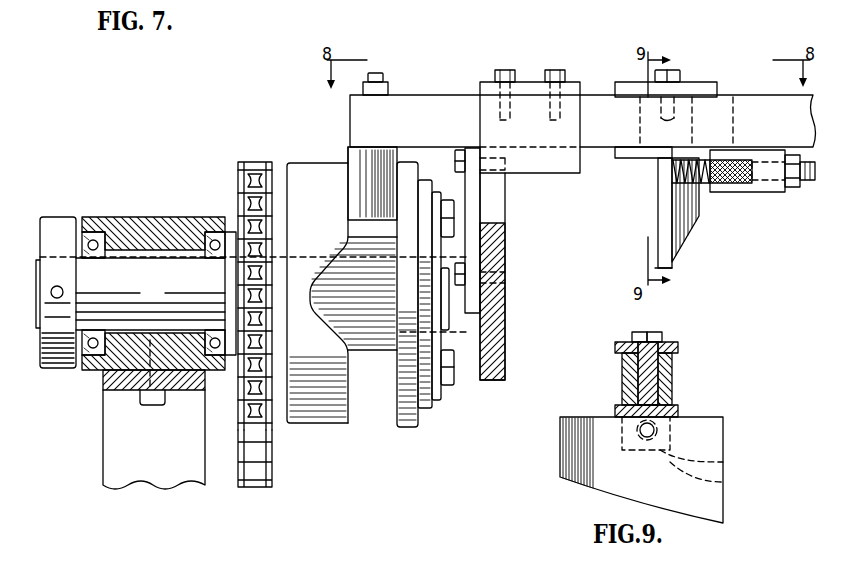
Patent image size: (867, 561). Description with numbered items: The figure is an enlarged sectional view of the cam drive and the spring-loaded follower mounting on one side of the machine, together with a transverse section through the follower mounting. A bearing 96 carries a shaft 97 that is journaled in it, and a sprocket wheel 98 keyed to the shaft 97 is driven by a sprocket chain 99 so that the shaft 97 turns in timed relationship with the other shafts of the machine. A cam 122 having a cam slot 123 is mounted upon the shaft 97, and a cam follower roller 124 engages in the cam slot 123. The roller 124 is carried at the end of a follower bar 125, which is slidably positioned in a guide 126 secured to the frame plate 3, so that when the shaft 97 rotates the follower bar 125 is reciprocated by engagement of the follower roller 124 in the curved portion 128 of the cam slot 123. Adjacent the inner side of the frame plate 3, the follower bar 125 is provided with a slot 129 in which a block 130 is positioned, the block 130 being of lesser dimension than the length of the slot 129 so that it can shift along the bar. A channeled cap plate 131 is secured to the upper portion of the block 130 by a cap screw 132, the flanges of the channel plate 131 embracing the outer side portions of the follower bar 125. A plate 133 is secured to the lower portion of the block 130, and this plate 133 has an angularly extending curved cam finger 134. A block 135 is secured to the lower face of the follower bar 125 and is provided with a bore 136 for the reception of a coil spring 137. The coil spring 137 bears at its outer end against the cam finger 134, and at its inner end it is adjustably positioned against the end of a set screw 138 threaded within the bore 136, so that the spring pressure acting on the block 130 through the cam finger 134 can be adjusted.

In FIG. 7, the frame plate 3 is at (508, 342).
In FIG. 7, the bearing 96 is at (152, 222).
In FIG. 7, the shaft 97 is at (174, 280).
In FIG. 7, the sprocket wheel 98 is at (255, 195).
In FIG. 7, the sprocket chain 99 is at (273, 456).
In FIG. 7, the cam 122 is at (325, 178).
In FIG. 7, the cam slot 123 is at (374, 385).
In FIG. 7, the cam follower roller 124 is at (367, 170).
In FIG. 7, the follower bar 125 is at (444, 108).
In FIG. 7, the guide 126 is at (527, 85).
In FIG. 7, the curved portion 128 is at (300, 178).
In FIG. 7, the slot 129 is at (733, 110).
In FIG. 7, the block 130 is at (695, 121).
In FIG. 9, the block 130 is at (672, 385).
In FIG. 7, the channeled cap plate 131 is at (627, 88).
In FIG. 9, the channeled cap plate 131 is at (678, 347).
In FIG. 7, the cap screw 132 is at (680, 72).
In FIG. 9, the cap screw 132 is at (650, 332).
In FIG. 7, the plate 133 is at (638, 159).
In FIG. 9, the plate 133 is at (678, 410).
In FIG. 7, the cam finger 134 is at (685, 220).
In FIG. 9, the cam finger 134 is at (702, 440).
In FIG. 7, the block 135 is at (796, 189).
In FIG. 9, the block 135 is at (723, 462).
In FIG. 7, the bore 136 is at (772, 193).
In FIG. 7, the coil spring 137 is at (730, 164).
In FIG. 9, the coil spring 137 is at (723, 482).
In FIG. 7, the set screw 138 is at (806, 182).